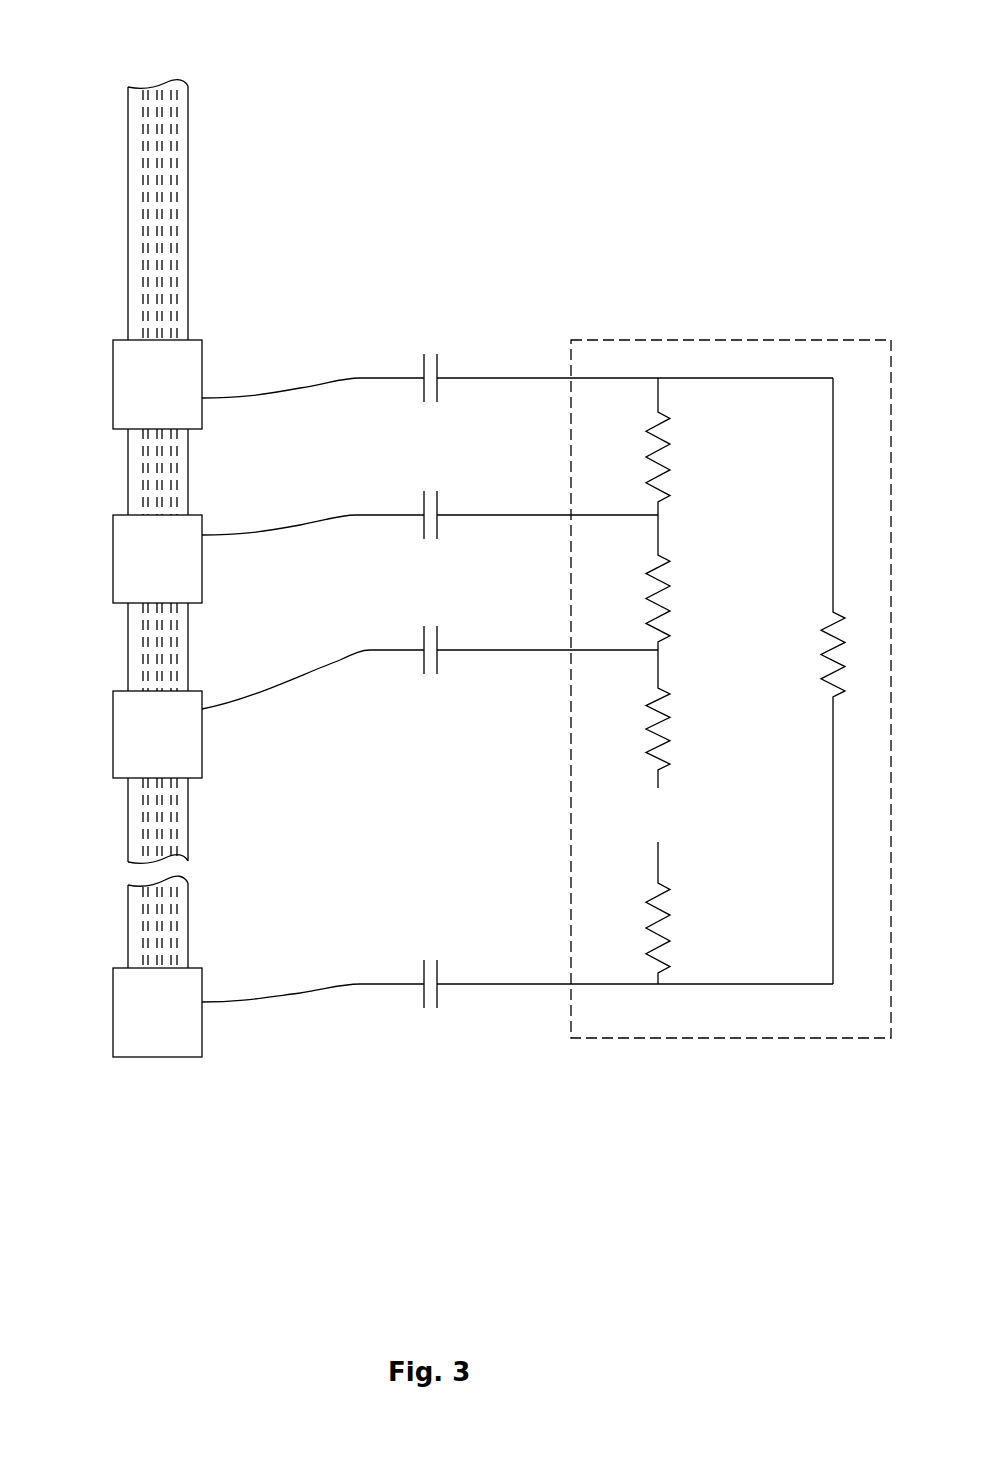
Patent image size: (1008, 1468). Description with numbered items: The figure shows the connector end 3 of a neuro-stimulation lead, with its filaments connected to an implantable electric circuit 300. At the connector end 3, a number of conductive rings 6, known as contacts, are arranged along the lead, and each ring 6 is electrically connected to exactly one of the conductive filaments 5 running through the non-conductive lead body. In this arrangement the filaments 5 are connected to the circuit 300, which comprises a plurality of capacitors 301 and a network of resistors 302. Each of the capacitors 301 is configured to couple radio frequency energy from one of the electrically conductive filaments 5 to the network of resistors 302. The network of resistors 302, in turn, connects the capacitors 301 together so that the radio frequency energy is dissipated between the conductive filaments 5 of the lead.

The proximal end 3 is at (222, 107).
The conductive filaments 5 is at (172, 137).
The conductive rings 6 is at (118, 393).
The implantable electric circuit 300 is at (546, 540).
The capacitors 301 is at (427, 335).
The network of resistors 302 is at (778, 322).